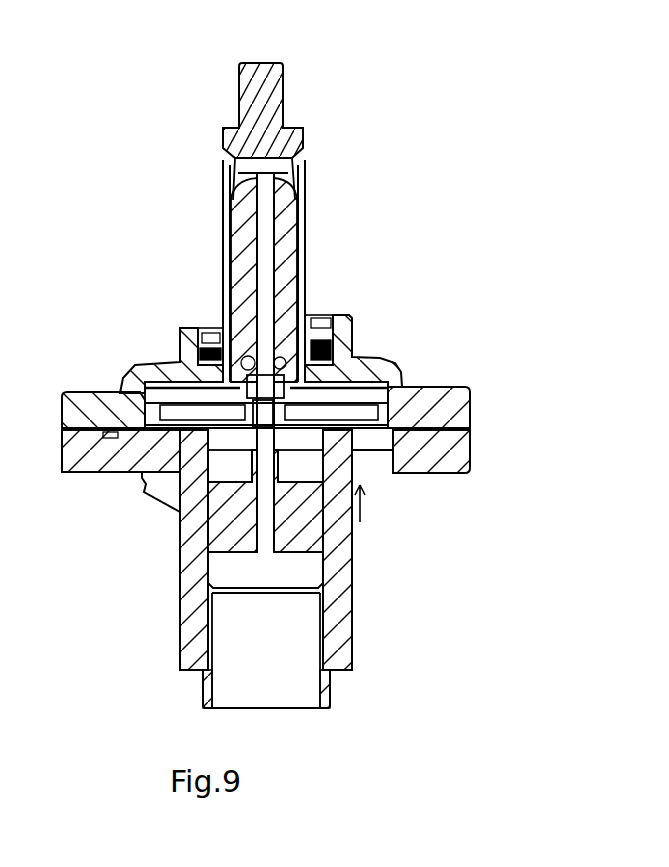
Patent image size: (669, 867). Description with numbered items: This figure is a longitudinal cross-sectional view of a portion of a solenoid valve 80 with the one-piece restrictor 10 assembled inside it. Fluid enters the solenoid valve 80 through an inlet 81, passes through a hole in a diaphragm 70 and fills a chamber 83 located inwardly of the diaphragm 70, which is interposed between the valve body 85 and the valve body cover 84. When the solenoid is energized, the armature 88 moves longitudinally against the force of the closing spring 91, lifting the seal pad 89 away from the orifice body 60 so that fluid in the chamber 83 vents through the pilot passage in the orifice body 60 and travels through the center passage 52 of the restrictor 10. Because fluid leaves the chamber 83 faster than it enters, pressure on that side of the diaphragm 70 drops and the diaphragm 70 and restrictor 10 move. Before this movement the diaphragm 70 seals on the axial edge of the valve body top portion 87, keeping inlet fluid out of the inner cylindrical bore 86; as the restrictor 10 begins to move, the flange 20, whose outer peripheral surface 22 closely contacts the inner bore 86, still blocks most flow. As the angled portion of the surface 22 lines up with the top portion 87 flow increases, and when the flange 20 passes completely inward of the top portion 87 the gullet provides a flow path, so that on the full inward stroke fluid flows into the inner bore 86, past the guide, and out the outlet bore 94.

The solenoid valve 80 is at (345, 130).
The center passage 52 is at (250, 515).
The armature 88 is at (284, 272).
The valve body top portion 87 is at (392, 358).
The orifice body 60 is at (160, 372).
The seal pad 89 is at (190, 345).
The closing spring 91 is at (340, 322).
The valve body cover 84 is at (467, 386).
The restrictor 10 is at (127, 470).
The flange 20 is at (205, 455).
The chamber 83 is at (340, 362).
The outer peripheral surface 22 is at (372, 374).
The diaphragm 70 is at (347, 375).
The valve body 85 is at (340, 592).
The inner cylindrical bore 86 is at (352, 560).
The outlet bore 94 is at (311, 700).
The inlet 81 is at (391, 470).